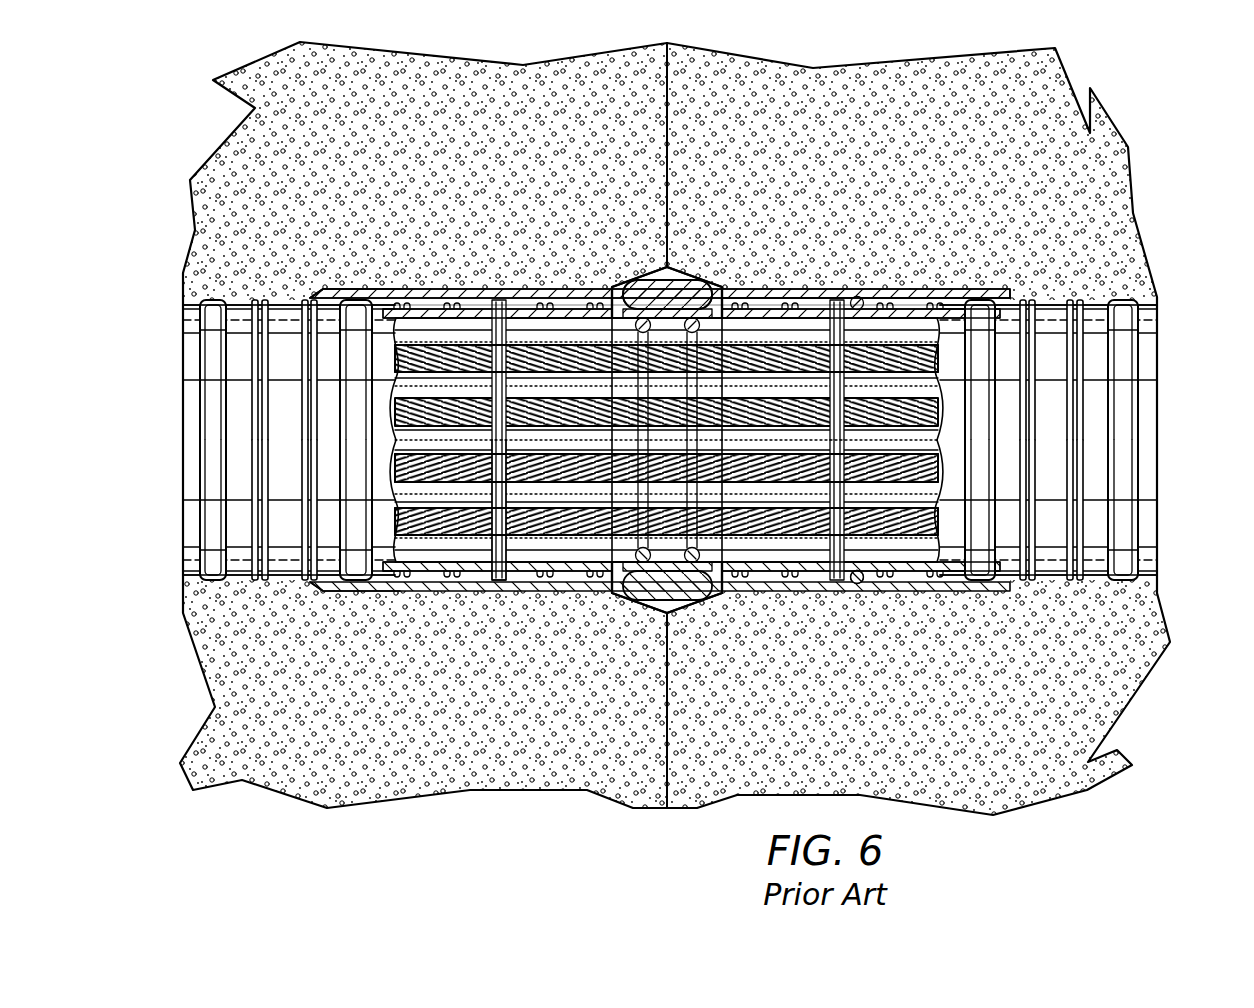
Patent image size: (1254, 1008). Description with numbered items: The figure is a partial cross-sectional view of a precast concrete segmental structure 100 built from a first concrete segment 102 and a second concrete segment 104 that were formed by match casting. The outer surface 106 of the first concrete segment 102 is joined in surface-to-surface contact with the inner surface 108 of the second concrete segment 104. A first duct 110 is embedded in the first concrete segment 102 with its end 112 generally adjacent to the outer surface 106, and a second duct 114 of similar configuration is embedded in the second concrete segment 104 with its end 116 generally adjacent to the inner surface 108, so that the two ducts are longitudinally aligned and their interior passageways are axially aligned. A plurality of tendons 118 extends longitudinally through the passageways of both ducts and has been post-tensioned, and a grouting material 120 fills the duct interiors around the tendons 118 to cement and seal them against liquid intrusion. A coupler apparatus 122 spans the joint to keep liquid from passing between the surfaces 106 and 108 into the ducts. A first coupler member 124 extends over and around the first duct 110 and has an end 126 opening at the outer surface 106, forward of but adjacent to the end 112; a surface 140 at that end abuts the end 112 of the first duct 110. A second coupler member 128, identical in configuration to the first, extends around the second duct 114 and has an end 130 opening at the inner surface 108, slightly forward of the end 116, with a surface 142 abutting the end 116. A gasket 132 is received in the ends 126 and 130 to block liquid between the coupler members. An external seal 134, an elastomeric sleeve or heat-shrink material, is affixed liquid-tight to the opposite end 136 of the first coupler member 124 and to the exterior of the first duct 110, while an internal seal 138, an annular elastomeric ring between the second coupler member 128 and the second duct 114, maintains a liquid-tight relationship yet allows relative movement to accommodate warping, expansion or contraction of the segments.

The precast concrete segmental structure 100 is at (830, 46).
The first concrete segment 102 is at (240, 140).
The second concrete segment 104 is at (1115, 140).
The outer surface 106 is at (667, 85).
The inner surface 108 is at (667, 122).
The first duct 110 is at (190, 525).
The end of first duct 112 is at (515, 588).
The second duct 114 is at (1145, 398).
The end of second duct 116 is at (760, 578).
The tendons 118 is at (573, 350).
The grouting material 120 is at (890, 500).
The coupler apparatus 122 is at (508, 270).
The first coupler member 124 is at (395, 592).
The end of first coupler member 126 is at (660, 618).
The second coupler member 128 is at (818, 292).
The end of second coupler member 130 is at (692, 276).
The gasket 132 is at (648, 273).
The external seal 134 is at (325, 290).
The opposite end of first coupler member 136 is at (402, 290).
The internal seal 138 is at (858, 578).
The surface of first coupler member end 140 is at (598, 580).
The surface of second coupler member 142 is at (742, 292).